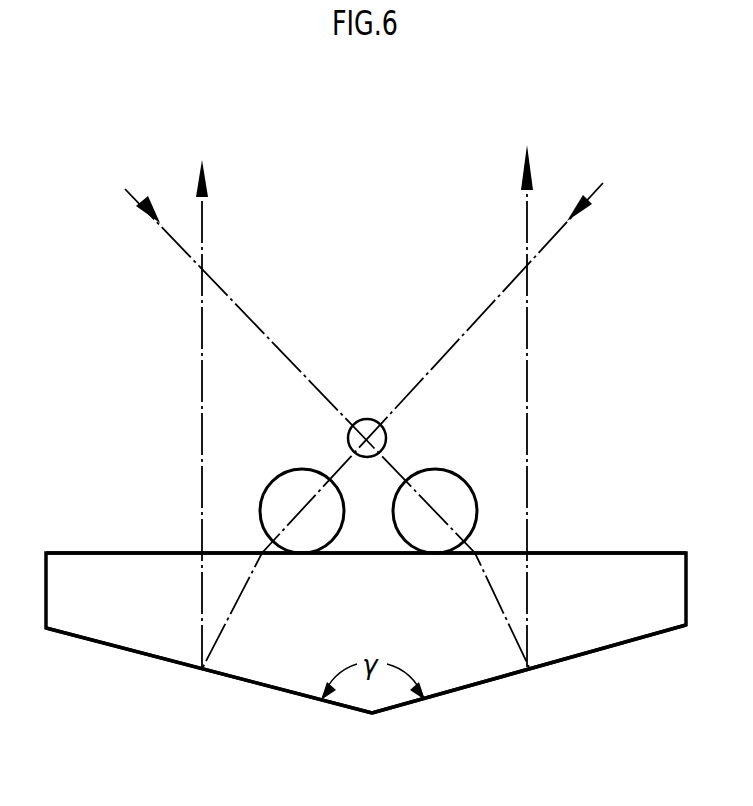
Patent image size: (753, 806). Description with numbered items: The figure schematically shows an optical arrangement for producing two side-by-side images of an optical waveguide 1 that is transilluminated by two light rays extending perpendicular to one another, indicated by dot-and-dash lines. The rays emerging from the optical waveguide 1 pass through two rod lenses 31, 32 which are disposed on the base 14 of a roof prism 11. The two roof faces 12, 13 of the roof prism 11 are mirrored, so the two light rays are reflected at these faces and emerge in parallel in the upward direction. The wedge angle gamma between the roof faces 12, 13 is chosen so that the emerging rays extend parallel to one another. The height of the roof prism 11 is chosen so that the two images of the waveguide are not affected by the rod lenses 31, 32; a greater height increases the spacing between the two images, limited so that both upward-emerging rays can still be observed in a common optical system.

The optical waveguide 1 is at (367, 419).
The roof prism 11 is at (650, 630).
The roof face 12 is at (223, 674).
The roof face 13 is at (509, 674).
The base 14 is at (618, 552).
The rod lens 31 is at (291, 470).
The rod lens 32 is at (471, 474).